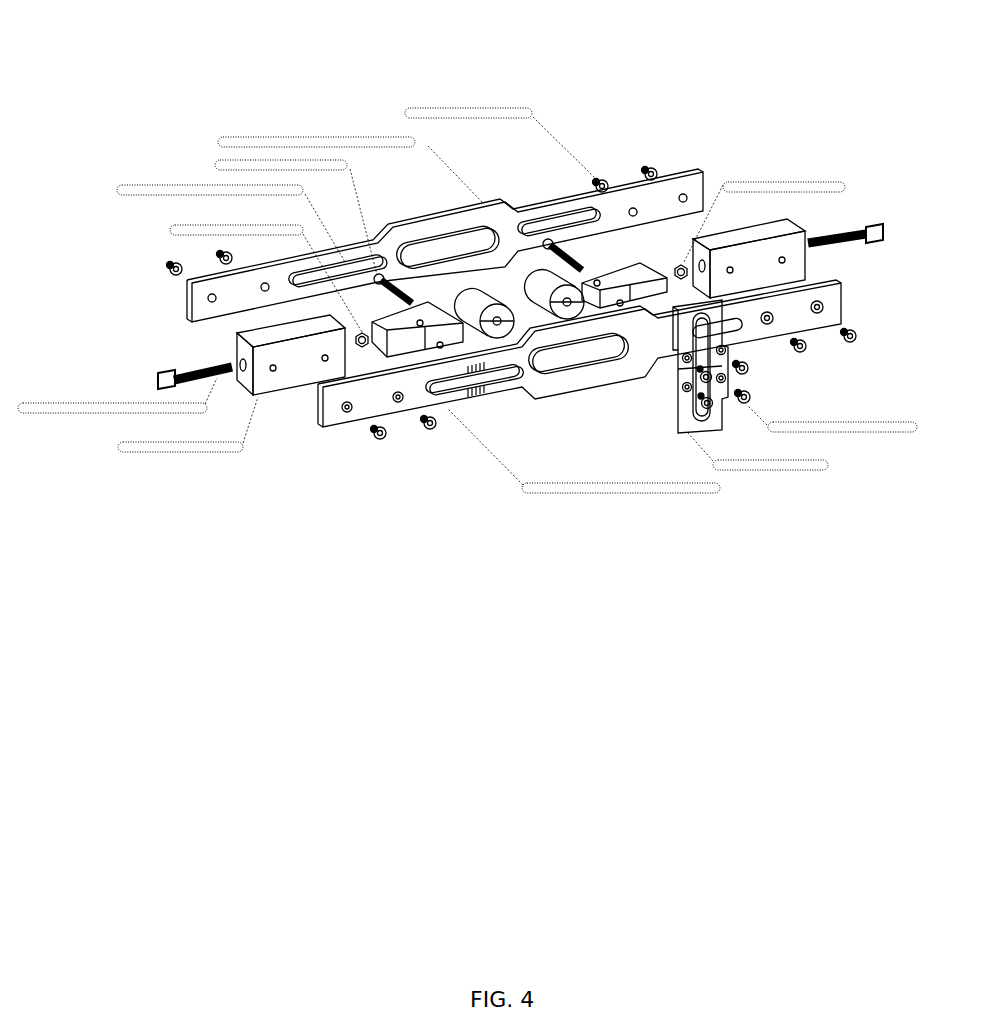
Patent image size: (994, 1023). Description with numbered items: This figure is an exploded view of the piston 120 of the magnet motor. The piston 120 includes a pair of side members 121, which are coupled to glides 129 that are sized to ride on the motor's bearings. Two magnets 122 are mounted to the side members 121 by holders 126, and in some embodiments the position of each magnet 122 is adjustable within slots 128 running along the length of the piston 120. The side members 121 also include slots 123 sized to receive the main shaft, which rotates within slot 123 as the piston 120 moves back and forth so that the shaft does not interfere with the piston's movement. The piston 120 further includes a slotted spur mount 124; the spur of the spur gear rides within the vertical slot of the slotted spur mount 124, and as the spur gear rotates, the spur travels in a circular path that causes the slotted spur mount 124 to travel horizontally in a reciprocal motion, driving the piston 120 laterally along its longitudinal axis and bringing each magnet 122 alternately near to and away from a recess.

The piston 120 is at (262, 612).
The side members 121 is at (213, 287).
The magnets 122 is at (488, 309).
The slots 123 is at (568, 368).
The slotted spur mount 124 is at (700, 368).
The holders 126 is at (645, 277).
The slots 128 is at (457, 370).
The glides 129 is at (781, 238).